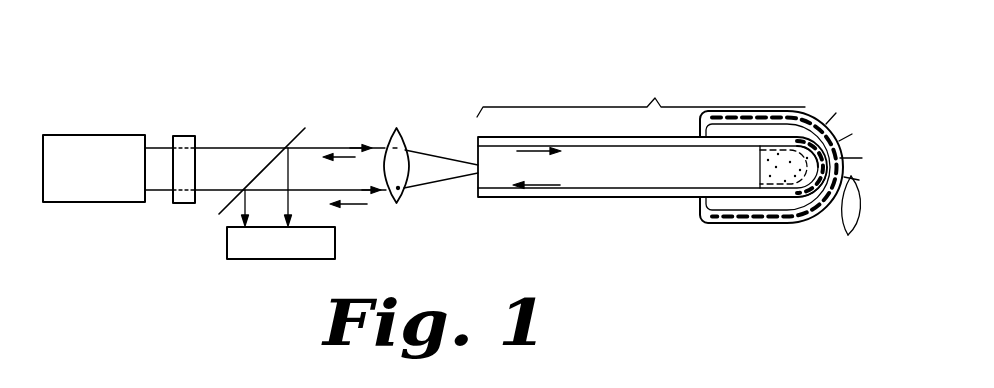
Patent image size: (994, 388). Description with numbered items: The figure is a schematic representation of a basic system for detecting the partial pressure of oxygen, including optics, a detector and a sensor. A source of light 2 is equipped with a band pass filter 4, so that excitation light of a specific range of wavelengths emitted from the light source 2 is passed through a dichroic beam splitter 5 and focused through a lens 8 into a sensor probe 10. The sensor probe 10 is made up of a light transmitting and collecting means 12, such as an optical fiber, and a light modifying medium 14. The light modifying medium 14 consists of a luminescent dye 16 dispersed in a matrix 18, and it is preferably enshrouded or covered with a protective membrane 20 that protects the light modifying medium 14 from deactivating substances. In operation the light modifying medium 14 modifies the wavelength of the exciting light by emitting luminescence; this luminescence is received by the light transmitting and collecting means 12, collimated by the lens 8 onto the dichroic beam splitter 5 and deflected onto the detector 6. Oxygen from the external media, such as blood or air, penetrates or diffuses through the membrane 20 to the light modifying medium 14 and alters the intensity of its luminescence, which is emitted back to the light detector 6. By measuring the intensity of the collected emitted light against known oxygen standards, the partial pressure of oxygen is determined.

The source of light 2 is at (94, 150).
The band pass filter 4 is at (183, 145).
The dichroic beam splitter 5 is at (270, 165).
The detector 6 is at (278, 250).
The lens 8 is at (403, 136).
The sensor probe 10 is at (669, 158).
The light transmitting and collecting means 12 is at (625, 191).
The light modifying medium 14 is at (792, 209).
The luminescent dye 16 is at (795, 146).
The matrix 18 is at (769, 140).
The protective membrane 20 is at (703, 223).